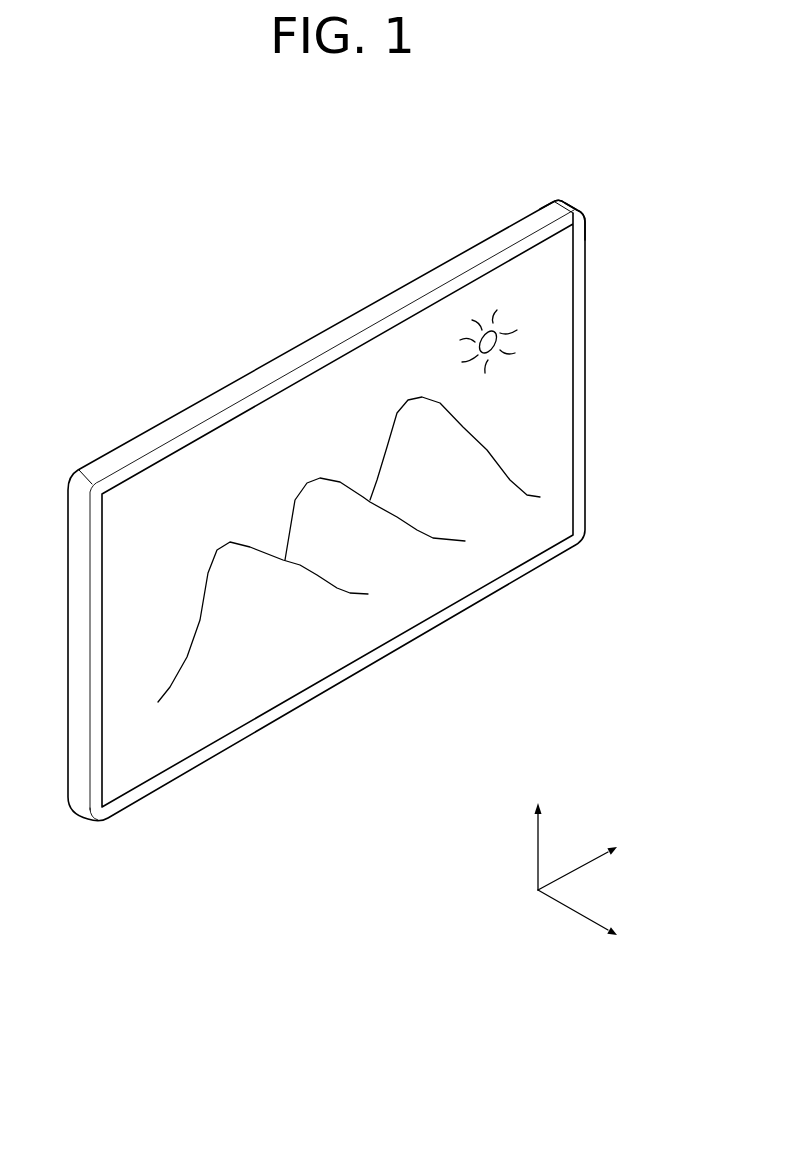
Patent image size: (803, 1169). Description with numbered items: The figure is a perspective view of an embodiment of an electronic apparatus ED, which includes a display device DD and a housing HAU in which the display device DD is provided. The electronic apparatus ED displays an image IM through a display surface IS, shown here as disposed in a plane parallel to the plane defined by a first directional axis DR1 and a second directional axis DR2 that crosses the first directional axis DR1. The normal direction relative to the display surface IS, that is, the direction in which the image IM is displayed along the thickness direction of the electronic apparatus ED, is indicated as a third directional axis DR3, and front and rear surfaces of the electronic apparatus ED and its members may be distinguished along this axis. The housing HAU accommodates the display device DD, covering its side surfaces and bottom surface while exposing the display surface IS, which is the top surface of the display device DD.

The electronic apparatus ED is at (372, 463).
The display device DD is at (545, 289).
The display surface IS is at (545, 446).
The image IM is at (493, 348).
The housing HAU is at (550, 207).
The first directional axis DR1 is at (598, 861).
The second directional axis DR2 is at (539, 830).
The third directional axis DR3 is at (600, 924).